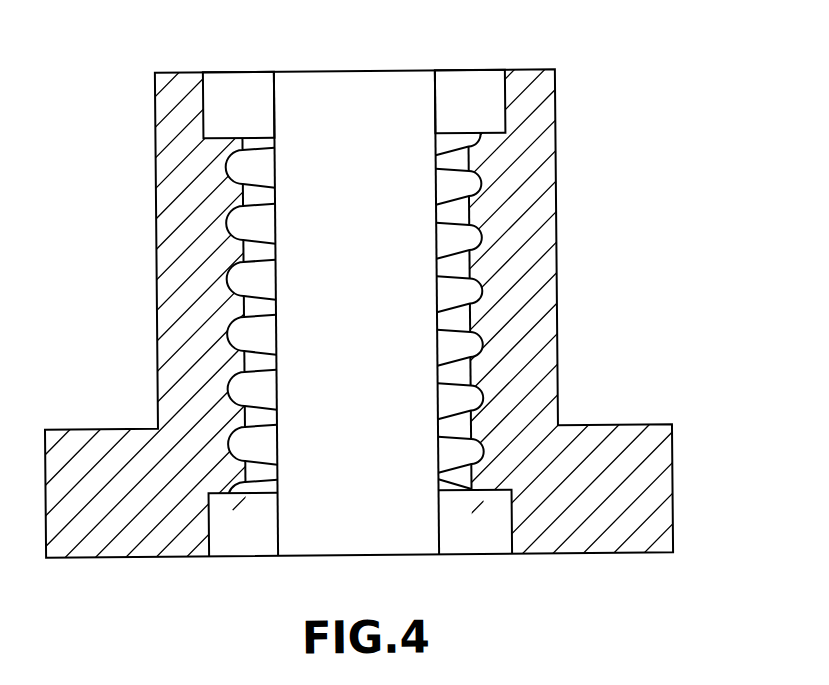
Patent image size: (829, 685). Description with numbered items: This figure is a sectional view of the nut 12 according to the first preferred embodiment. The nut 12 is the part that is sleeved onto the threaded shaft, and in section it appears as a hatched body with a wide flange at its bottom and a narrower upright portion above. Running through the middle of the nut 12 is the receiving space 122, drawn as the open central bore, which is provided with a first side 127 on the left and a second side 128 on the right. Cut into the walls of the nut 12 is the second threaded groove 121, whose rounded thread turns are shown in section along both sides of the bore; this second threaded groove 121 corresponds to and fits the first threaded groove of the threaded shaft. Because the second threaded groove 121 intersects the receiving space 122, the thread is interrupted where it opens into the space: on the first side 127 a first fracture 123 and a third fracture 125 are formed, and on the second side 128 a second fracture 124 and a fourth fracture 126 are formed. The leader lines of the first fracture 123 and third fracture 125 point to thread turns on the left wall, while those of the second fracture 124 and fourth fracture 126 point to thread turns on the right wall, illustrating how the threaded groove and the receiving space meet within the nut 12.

The nut 12 is at (556, 93).
The second threaded groove 121 is at (370, 311).
The receiving space 122 is at (417, 138).
The first fracture 123 is at (229, 217).
The second fracture 124 is at (485, 196).
The third fracture 125 is at (229, 273).
The fourth fracture 126 is at (485, 251).
The first side 127 is at (276, 118).
The second side 128 is at (436, 115).